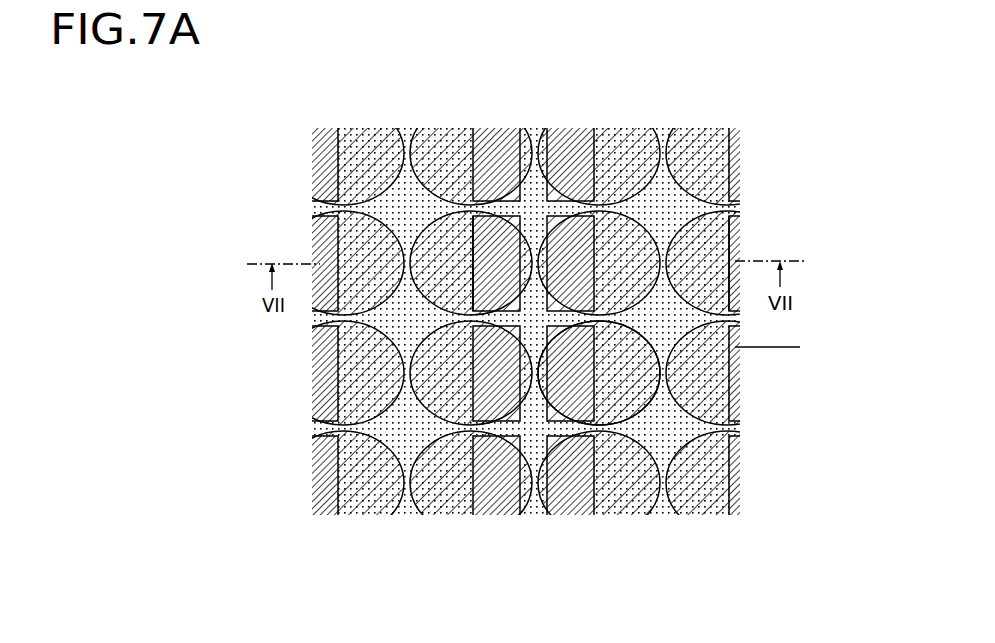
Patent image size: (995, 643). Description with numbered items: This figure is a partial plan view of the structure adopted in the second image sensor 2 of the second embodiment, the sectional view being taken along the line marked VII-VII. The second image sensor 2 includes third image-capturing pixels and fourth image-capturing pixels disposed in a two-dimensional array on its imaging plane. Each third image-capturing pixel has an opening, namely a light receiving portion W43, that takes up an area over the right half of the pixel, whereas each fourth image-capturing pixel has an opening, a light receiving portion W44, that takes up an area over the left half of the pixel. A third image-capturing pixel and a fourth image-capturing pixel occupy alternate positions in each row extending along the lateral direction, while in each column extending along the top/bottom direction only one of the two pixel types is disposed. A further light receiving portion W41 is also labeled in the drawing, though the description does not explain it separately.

The second image sensor 2 is at (663, 95).
The first overlap width W41 is at (401, 195).
The light receiving portion W43 is at (741, 192).
The light receiving portion W44 is at (647, 383).